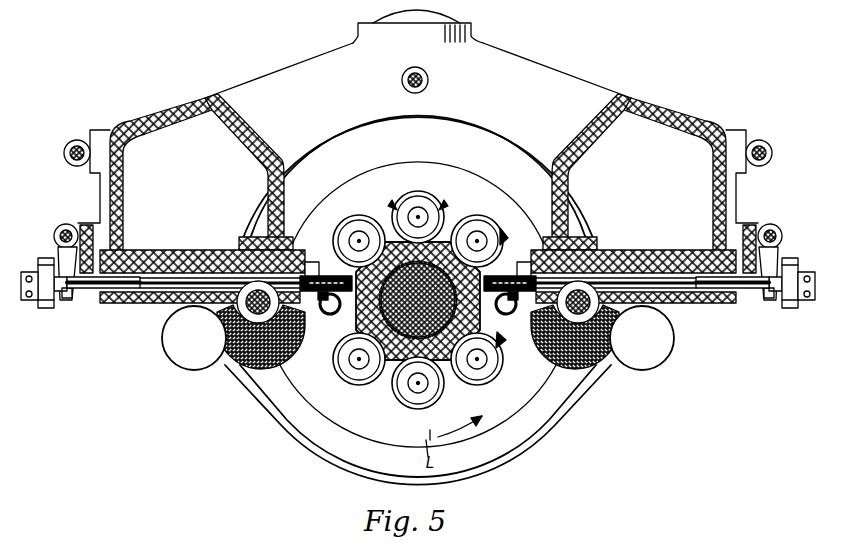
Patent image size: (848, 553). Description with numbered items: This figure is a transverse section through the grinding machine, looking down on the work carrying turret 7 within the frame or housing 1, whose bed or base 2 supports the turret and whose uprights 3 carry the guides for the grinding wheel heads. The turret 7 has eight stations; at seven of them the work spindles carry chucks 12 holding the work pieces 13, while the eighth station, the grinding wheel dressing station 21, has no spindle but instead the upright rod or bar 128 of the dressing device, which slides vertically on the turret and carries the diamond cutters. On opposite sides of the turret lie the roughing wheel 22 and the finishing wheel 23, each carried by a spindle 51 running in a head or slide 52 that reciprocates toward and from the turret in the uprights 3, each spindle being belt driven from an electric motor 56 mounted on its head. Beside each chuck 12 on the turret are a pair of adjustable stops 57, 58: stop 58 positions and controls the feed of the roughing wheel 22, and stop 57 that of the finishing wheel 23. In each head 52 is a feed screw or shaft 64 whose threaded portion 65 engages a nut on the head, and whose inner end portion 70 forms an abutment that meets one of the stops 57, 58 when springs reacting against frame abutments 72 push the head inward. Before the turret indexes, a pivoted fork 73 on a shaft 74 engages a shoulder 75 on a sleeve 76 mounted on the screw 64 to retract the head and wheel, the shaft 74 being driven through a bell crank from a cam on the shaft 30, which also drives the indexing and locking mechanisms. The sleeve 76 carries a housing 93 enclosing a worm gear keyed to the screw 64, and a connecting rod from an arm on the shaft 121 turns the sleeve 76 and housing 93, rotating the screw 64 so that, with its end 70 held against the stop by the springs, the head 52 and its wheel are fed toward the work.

The frame or housing 1 is at (606, 80).
The bed or base 2 is at (300, 460).
The uprights 3 is at (262, 146).
The work carrying turret 7 is at (381, 430).
The chucks 12 is at (353, 219).
The work pieces 13 is at (340, 344).
The grinding wheel dressing station 21 is at (500, 250).
The roughing grinding wheel 22 is at (564, 368).
The finishing grinding wheel 23 is at (272, 370).
The shaft 30 is at (429, 80).
The spindles 51 is at (243, 370).
The head or slide 52 is at (193, 249).
The electric motor 56 is at (183, 345).
The adjustable stop 57 is at (445, 214).
The adjustable stop 58 is at (396, 211).
The feed screw or shaft 64 is at (168, 280).
The threaded portion 65 is at (540, 250).
The end portion of screw 70 is at (330, 275).
The abutments 72 is at (89, 306).
The pivoted fork 73 is at (62, 256).
The shaft 74 is at (65, 225).
The shoulder 75 is at (66, 302).
The sleeve 76 is at (103, 294).
The housing 93 is at (47, 312).
The shaft 121 is at (65, 150).
The upright rod or bar 128 is at (502, 339).